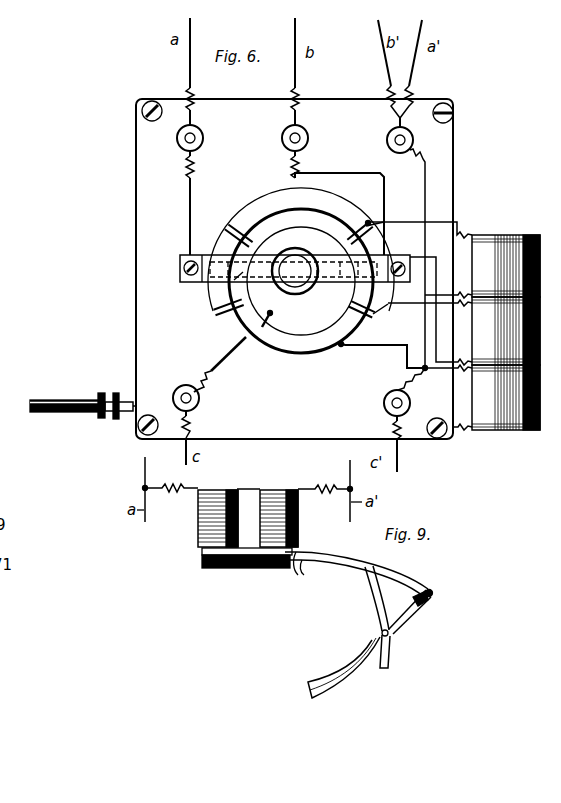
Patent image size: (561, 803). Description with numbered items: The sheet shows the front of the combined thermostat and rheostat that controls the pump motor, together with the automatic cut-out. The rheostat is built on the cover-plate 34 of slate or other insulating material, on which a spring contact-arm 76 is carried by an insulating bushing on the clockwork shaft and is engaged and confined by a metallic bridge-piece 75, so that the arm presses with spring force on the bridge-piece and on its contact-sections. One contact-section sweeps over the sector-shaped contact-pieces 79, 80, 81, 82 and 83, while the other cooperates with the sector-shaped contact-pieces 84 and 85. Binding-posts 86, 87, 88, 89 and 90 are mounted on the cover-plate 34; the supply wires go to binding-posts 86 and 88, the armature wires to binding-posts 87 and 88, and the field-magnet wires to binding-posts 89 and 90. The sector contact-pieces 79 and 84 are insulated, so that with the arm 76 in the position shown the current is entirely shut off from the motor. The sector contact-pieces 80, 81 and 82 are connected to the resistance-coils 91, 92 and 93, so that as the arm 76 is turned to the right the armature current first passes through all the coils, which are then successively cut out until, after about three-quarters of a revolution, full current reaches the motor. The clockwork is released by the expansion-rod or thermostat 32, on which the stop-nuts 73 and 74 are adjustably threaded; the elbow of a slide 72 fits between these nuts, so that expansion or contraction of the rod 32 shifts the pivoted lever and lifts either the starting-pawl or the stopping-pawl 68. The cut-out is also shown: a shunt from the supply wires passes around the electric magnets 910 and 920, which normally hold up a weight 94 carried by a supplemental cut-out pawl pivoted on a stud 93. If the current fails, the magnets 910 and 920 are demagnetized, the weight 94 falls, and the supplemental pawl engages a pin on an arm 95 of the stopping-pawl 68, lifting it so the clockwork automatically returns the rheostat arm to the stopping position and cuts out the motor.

In FIG. 6, the expansion-rod or thermostat 32 is at (42, 400).
In FIG. 6, the cover-plate 34 is at (150, 313).
In FIG. 9, the stopping-pawl 68 is at (378, 610).
In FIG. 6, the slide 72 is at (126, 401).
In FIG. 6, the stop-nut 73 is at (97, 418).
In FIG. 6, the stop-nut 74 is at (121, 420).
In FIG. 6, the bridge-piece 75 is at (206, 284).
In FIG. 6, the spring contact-arm 76 is at (222, 318).
In FIG. 6, the sector-shaped contact-piece 79 is at (219, 236).
In FIG. 6, the sector-shaped contact-piece 80 is at (262, 199).
In FIG. 6, the sector-shaped contact-piece 81 is at (362, 214).
In FIG. 6, the sector-shaped contact-piece 82 is at (367, 322).
In FIG. 6, the sector-shaped contact-piece 83 is at (286, 350).
In FIG. 6, the sector-shaped contact-piece 84 is at (317, 257).
In FIG. 6, the sector-shaped contact-piece 85 is at (313, 305).
In FIG. 6, the binding-post 86 is at (177, 140).
In FIG. 6, the binding-post 87 is at (282, 139).
In FIG. 6, the binding-post 88 is at (395, 150).
In FIG. 6, the binding-post 89 is at (200, 399).
In FIG. 6, the binding-post 90 is at (384, 407).
In FIG. 6, the resistance-coil 91 is at (506, 266).
In FIG. 6, the resistance-coil 92 is at (506, 331).
In FIG. 6, the resistance-coil / stud 93 is at (506, 397).
In FIG. 9, the resistance-coil / stud 93 is at (436, 596).
In FIG. 9, the weight 94 is at (247, 568).
In FIG. 9, the arm 95 is at (410, 612).
In FIG. 9, the electric magnet 910 is at (199, 518).
In FIG. 9, the electric magnet 920 is at (296, 518).